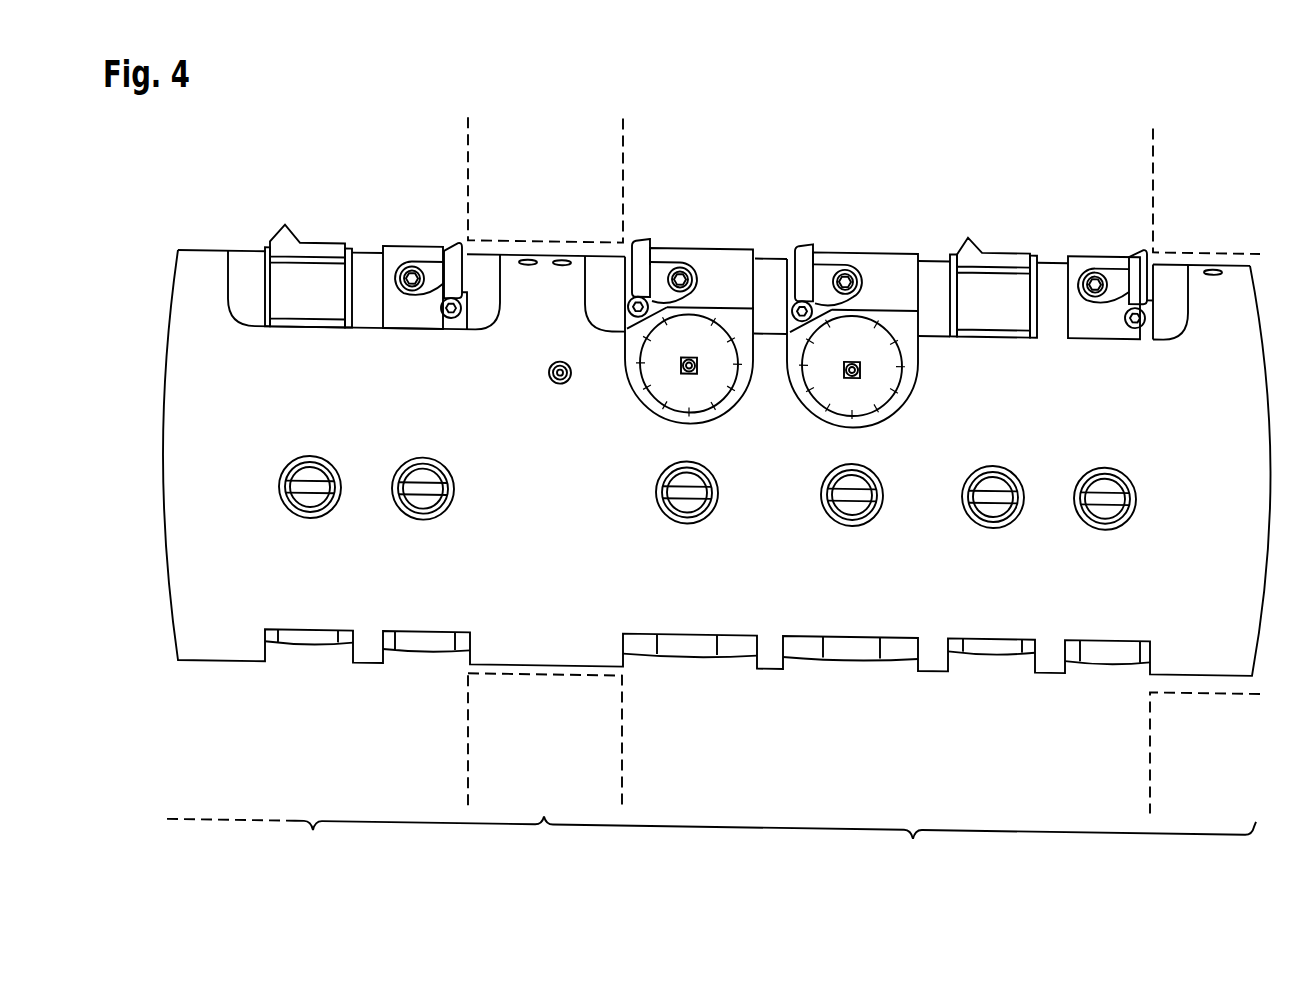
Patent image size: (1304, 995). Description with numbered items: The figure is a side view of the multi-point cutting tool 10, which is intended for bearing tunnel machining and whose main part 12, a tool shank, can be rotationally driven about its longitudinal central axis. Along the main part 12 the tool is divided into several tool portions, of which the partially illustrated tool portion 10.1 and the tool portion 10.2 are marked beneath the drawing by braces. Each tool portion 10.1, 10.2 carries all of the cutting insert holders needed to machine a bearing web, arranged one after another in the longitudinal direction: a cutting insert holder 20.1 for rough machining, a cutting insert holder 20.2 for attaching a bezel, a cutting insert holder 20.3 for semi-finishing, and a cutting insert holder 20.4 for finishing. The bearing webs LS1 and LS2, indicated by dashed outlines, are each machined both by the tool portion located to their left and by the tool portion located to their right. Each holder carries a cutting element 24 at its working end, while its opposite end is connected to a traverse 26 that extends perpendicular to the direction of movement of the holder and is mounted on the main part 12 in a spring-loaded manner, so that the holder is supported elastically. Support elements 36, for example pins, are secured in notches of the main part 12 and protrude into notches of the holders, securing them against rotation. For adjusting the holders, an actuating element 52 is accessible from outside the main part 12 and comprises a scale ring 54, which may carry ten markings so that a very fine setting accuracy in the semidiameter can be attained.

The multi-point cutting tool 10 is at (212, 176).
The tool portion 10.1 is at (355, 840).
The tool portion 10.2 is at (900, 844).
The main part 12 is at (548, 557).
The cutting insert holder for rough machining 20.1 is at (446, 205).
The cutting insert holder for attaching a bezel 20.2 is at (301, 200).
The cutting insert holder for semi-finishing 20.3 is at (682, 201).
The cutting insert holder for finishing 20.4 is at (860, 200).
The cutting element 24 is at (813, 228).
The traverse 26 is at (680, 636).
The support element 36 is at (423, 500).
The actuating element 52 is at (862, 335).
The scale ring 54 is at (720, 312).
The bearing web LS1 is at (596, 148).
The bearing web LS2 is at (1252, 149).